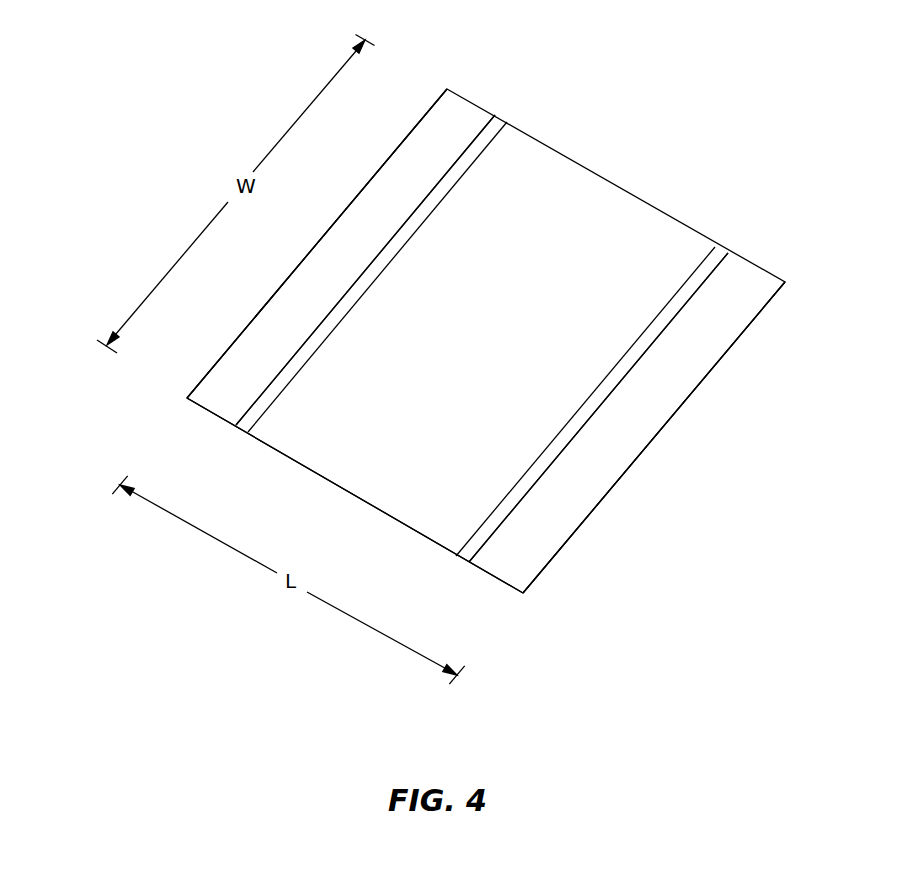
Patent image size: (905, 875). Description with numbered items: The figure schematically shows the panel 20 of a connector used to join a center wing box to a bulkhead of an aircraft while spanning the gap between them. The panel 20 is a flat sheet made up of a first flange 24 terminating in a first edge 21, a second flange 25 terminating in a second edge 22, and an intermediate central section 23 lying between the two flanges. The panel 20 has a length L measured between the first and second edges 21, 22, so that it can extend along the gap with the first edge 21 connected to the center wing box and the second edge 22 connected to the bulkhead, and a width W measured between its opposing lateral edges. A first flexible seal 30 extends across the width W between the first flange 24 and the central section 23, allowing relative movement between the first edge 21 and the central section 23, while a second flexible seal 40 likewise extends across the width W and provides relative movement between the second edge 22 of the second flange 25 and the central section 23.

The panel 20 is at (684, 137).
The first edge 21 is at (237, 337).
The second edge 22 is at (568, 540).
The intermediate central section 23 is at (367, 482).
The first flange 24 is at (222, 402).
The second flange 25 is at (510, 568).
The first flexible seal 30 is at (488, 140).
The second flexible seal 40 is at (710, 262).